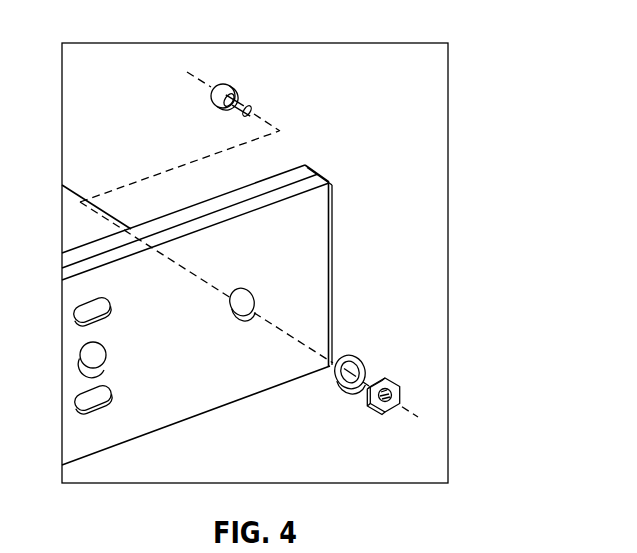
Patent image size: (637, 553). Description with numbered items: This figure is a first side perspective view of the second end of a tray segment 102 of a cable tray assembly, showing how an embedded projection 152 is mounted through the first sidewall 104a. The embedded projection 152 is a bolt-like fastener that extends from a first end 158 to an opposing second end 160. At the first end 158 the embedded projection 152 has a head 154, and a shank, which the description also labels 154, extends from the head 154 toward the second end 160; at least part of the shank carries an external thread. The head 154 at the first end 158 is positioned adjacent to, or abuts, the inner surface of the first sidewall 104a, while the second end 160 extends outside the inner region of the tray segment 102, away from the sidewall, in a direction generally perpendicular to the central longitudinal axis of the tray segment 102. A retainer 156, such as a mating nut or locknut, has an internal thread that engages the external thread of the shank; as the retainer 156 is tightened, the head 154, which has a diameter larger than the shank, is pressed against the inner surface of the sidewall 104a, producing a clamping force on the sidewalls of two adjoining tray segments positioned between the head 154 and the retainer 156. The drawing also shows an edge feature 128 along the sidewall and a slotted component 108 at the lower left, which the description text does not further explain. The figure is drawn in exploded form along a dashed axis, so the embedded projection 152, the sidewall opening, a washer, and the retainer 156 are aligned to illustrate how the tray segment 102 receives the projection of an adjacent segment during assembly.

The tray segment 102 is at (318, 300).
The first sidewall 104a is at (320, 250).
The bracket 108 is at (86, 443).
The edge of plate 128 is at (307, 223).
The embedded projection 152 is at (245, 94).
The head 154 is at (221, 87).
The retainer 156 is at (403, 388).
The first end of the embedded projection 158 is at (212, 96).
The second end of the embedded projection 160 is at (252, 109).